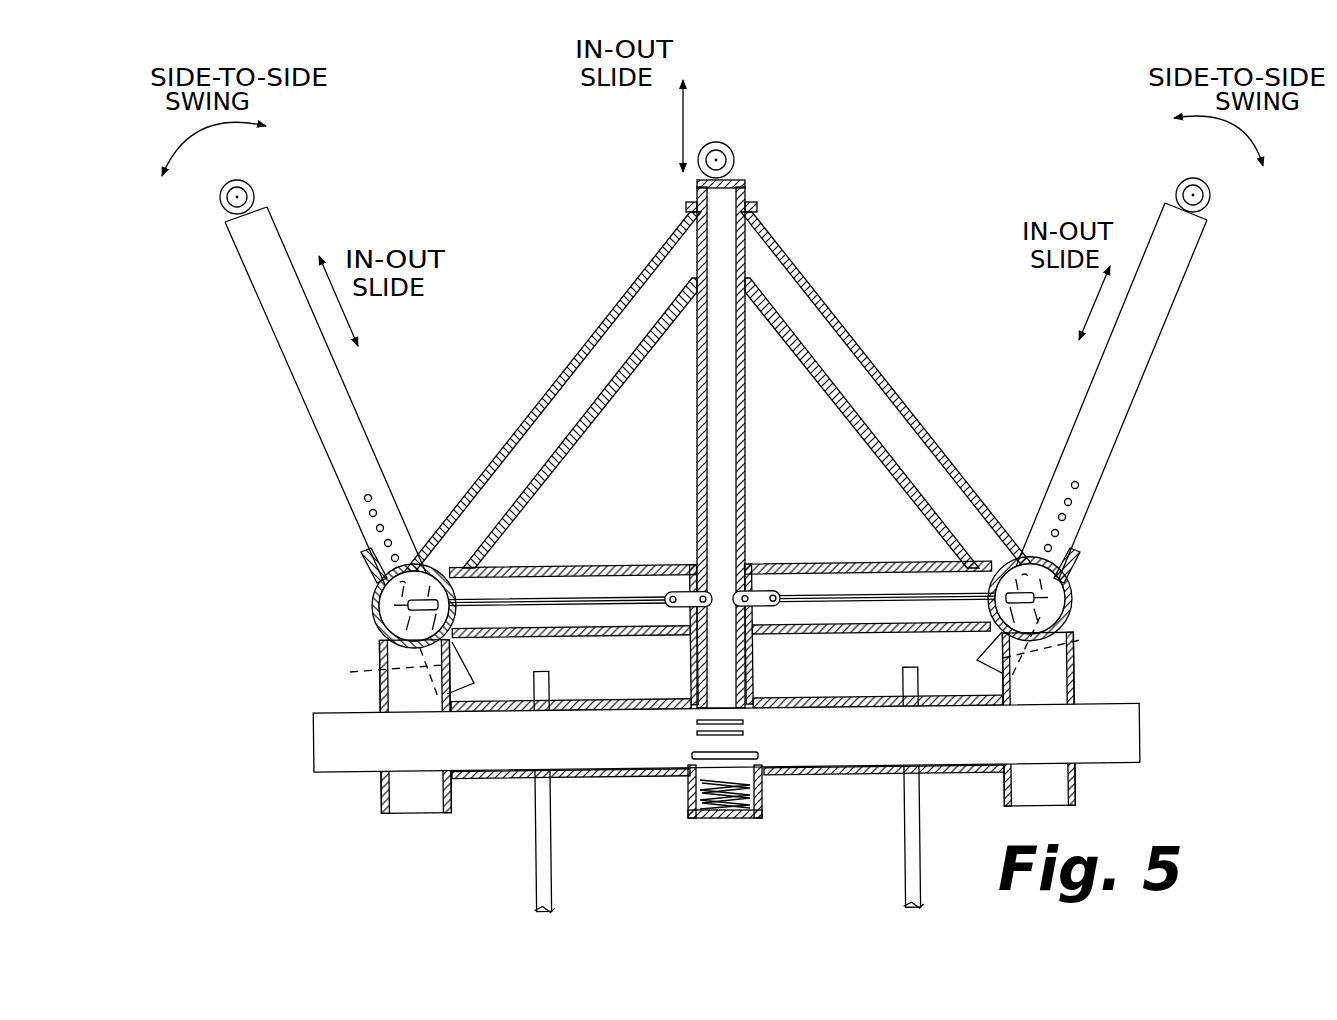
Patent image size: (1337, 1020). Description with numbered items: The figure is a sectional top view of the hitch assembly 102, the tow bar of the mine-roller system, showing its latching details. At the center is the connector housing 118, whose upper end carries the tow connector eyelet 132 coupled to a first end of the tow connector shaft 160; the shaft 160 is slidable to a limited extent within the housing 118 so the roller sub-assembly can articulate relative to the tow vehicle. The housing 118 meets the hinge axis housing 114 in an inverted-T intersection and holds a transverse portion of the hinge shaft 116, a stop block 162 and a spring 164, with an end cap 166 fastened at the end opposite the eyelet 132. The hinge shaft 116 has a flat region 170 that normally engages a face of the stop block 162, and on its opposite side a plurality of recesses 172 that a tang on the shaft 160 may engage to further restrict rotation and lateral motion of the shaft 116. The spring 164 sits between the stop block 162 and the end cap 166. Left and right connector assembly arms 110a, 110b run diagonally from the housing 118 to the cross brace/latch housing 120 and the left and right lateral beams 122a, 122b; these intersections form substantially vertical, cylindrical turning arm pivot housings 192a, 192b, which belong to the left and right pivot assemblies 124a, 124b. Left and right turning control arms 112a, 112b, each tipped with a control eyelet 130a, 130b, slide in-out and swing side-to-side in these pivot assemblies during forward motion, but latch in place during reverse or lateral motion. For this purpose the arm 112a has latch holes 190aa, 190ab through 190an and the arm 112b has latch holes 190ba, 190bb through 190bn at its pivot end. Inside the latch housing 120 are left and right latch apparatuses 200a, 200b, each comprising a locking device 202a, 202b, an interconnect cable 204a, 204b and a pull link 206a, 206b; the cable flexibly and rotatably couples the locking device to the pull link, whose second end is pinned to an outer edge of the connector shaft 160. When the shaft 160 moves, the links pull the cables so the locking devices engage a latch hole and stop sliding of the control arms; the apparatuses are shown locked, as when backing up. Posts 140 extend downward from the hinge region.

The hitch assembly 102 is at (826, 375).
The left connector assembly arm 110a is at (605, 318).
The right connector assembly arm 110b is at (825, 335).
The left turning control arm 112a is at (296, 358).
The right turning control arm 112b is at (1140, 358).
The hinge axis housing 114 is at (808, 699).
The hinge shaft 116 is at (1118, 702).
The connector housing 118 is at (760, 425).
The cross brace/latch housing 120 is at (536, 566).
The left lateral beam 122a is at (382, 797).
The right lateral beam 122b is at (1075, 792).
The left pivot assembly 124a is at (342, 608).
The right pivot assembly 124b is at (1117, 572).
The left control eyelet 130a is at (226, 206).
The right control eyelet 130b is at (1178, 190).
The tow connector eyelet 132 is at (736, 158).
The support posts 140 is at (535, 868).
The tow connector shaft 160 is at (747, 187).
The stop block 162 is at (690, 776).
The spring 164 is at (763, 797).
The end cap 166 is at (726, 822).
The flat region 170 is at (760, 754).
The recesses 172 is at (697, 733).
The latch hole 190aa is at (364, 497).
The latch hole 190ab is at (376, 528).
The latch hole 190an is at (410, 674).
The latch hole 190ba is at (1078, 484).
The latch hole 190bb is at (1070, 502).
The latch hole 190bn is at (1080, 640).
The left turning arm pivot housing 192a is at (378, 632).
The right turning arm pivot housing 192b is at (1074, 580).
The left latch apparatus 200a is at (550, 608).
The right latch apparatus 200b is at (940, 602).
The left locking device 202a is at (378, 590).
The right locking device 202b is at (1073, 590).
The left interconnect cable 204a is at (588, 598).
The right interconnect cable 204b is at (790, 602).
The left pull link 206a is at (684, 592).
The right pull link 206b is at (752, 588).